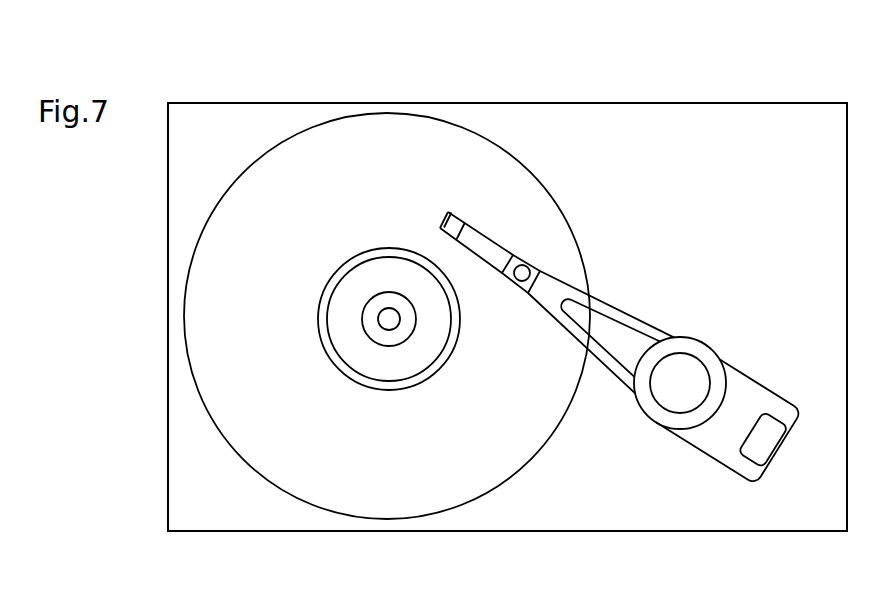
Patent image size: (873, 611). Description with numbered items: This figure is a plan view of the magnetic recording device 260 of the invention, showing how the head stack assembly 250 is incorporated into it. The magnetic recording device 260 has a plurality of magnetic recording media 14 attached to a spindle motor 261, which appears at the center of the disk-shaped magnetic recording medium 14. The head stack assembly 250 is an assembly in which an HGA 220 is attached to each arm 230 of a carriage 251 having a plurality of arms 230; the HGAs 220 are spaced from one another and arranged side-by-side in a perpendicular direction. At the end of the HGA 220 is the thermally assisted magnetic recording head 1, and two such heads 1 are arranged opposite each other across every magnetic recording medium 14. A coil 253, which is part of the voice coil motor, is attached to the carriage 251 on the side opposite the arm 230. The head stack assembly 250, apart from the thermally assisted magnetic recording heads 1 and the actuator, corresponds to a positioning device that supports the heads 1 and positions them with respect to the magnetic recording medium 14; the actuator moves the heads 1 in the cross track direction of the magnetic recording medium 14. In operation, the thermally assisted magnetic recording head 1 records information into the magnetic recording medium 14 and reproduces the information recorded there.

The thermally assisted magnetic recording head 1 is at (456, 210).
The magnetic recording medium 14 is at (312, 507).
The HGA 220 is at (495, 267).
The arm 230 is at (616, 380).
The head stack assembly 250 is at (686, 448).
The carriage 251 is at (688, 337).
The coil 253 is at (790, 456).
The magnetic recording device 260 is at (547, 78).
The spindle motor 261 is at (389, 330).